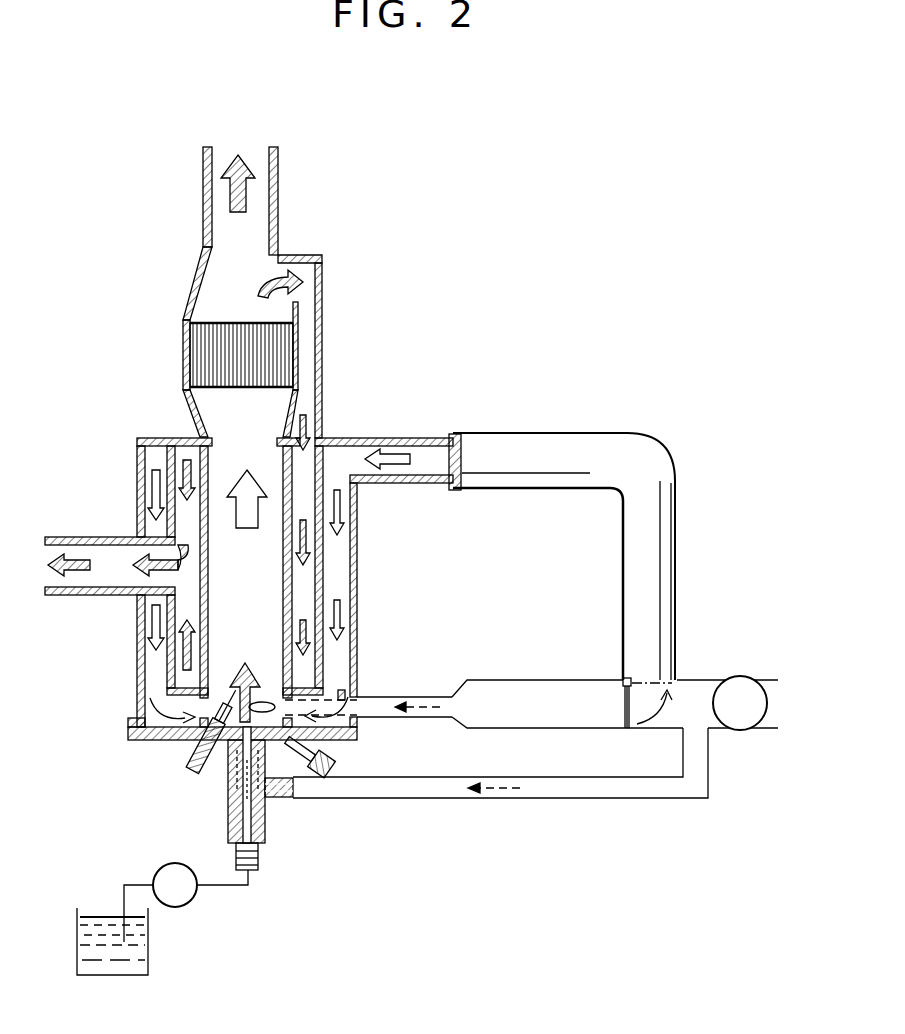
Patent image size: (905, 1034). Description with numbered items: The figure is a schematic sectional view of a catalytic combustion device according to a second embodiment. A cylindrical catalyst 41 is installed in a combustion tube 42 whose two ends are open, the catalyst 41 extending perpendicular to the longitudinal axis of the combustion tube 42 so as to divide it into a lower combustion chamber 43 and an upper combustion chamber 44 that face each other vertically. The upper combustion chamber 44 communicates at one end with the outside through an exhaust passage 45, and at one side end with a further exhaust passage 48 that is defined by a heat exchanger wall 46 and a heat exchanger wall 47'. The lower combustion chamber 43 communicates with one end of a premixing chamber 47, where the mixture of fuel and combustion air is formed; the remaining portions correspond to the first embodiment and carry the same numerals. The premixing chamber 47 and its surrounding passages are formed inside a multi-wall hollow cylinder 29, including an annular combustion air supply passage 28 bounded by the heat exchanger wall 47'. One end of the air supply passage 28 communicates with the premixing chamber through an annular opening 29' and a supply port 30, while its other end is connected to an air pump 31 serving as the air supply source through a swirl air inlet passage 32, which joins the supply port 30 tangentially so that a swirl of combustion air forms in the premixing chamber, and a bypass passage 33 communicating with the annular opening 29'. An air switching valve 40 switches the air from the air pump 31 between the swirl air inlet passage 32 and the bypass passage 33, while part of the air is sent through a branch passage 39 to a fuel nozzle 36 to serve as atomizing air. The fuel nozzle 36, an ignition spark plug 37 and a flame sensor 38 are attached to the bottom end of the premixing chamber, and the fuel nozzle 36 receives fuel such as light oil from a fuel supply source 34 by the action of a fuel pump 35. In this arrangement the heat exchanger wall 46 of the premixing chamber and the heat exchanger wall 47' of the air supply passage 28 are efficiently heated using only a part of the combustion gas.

The combustion air supply passage 28 is at (152, 654).
The multi-wall hollow cylinder 29 is at (232, 753).
The annular opening 29' is at (222, 703).
The supply port 30 is at (266, 700).
The air pump 31 is at (702, 703).
The swirl air inlet passage 32 is at (428, 699).
The bypass passage 33 is at (662, 485).
The fuel supply source 34 is at (148, 966).
The fuel pump 35 is at (186, 902).
The fuel nozzle 36 is at (265, 838).
The ignition spark plug 37 is at (213, 750).
The flame sensor 38 is at (325, 758).
The branch passage 39 is at (570, 790).
The air switching valve 40 is at (622, 679).
The cylindrical catalyst 41 is at (200, 341).
The combustion tube 42 is at (186, 380).
The lower combustion chamber 43 is at (240, 408).
The upper combustion chamber 44 is at (218, 298).
The exhaust passage 45 is at (253, 187).
The heat exchanger wall 46 is at (325, 558).
The premixing chamber 47 is at (388, 446).
The heat exchanger wall 47' is at (263, 586).
The exhaust passage 48 is at (183, 520).